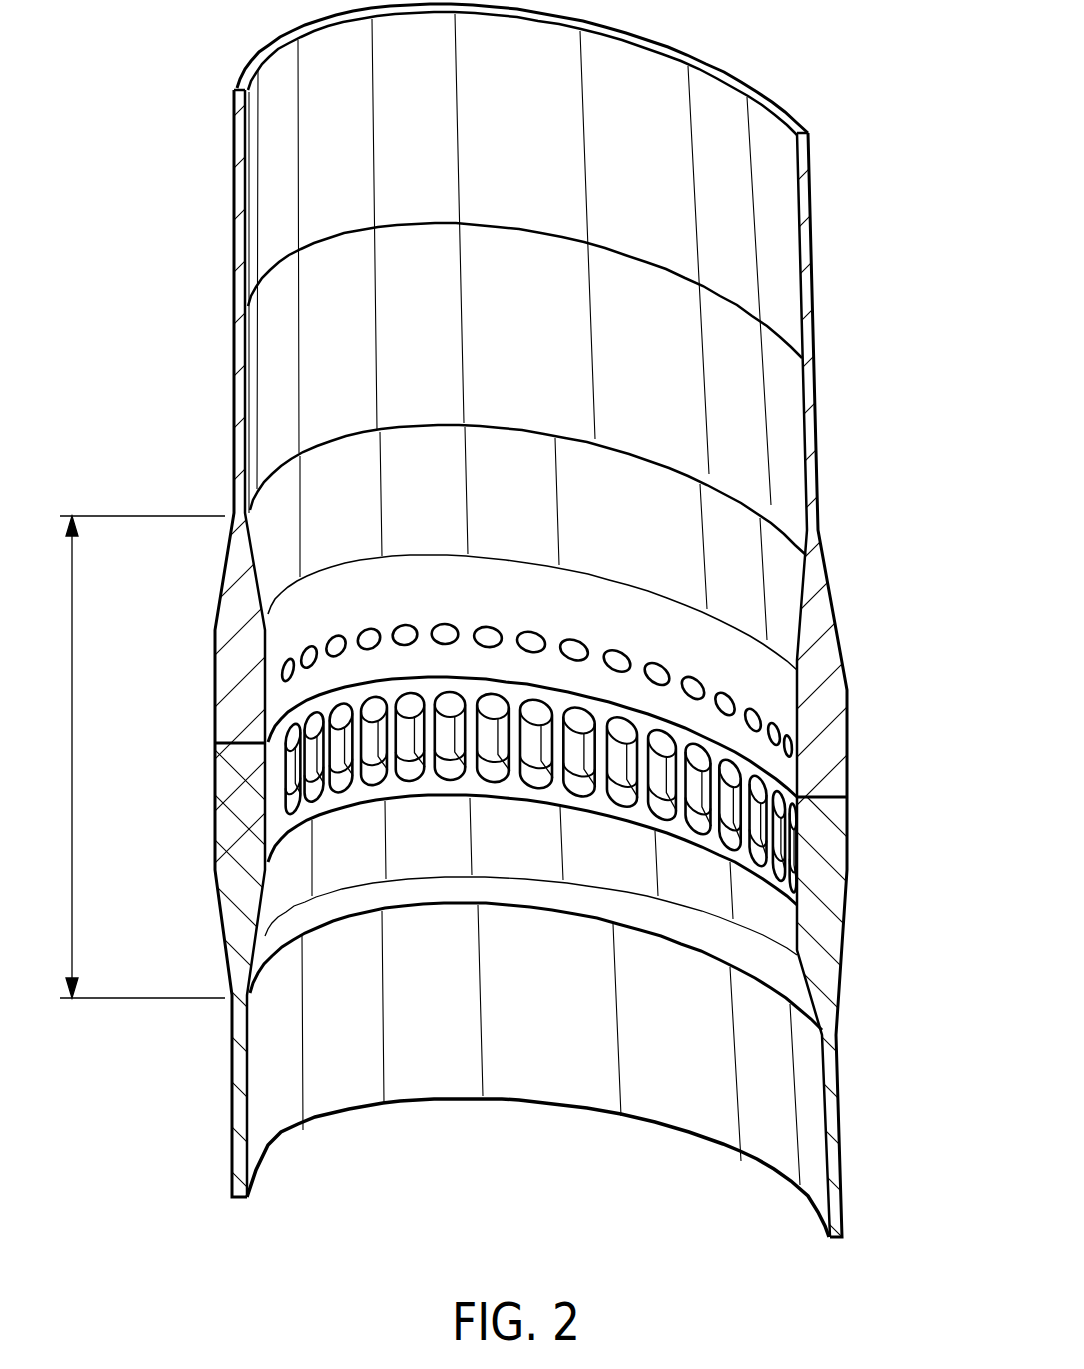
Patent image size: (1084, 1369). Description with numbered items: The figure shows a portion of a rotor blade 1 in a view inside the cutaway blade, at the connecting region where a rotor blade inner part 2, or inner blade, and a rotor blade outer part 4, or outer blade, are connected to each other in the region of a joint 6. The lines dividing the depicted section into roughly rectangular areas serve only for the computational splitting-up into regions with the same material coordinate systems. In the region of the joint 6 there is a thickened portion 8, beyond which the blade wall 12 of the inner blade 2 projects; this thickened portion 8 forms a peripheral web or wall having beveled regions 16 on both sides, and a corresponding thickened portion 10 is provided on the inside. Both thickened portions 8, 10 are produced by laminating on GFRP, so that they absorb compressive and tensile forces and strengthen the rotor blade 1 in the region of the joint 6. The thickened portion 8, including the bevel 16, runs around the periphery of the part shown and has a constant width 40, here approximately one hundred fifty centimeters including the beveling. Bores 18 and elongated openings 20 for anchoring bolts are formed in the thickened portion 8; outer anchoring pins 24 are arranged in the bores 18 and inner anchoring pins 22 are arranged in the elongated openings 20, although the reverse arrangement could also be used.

The rotor blade 1 is at (832, 38).
The rotor blade inner part 2 is at (182, 1192).
The rotor blade outer part 4 is at (234, 121).
The joint 6 is at (870, 797).
The thickened portion 8 is at (902, 690).
The thickened portion 10 is at (290, 622).
The blade wall 12 is at (845, 1205).
The beveled regions 16 is at (842, 642).
The bores 18 is at (727, 692).
The elongated openings 20 is at (648, 800).
The inner anchoring pins 22 is at (562, 795).
The outer anchoring pins 24 is at (788, 800).
The constant width 40 is at (95, 700).